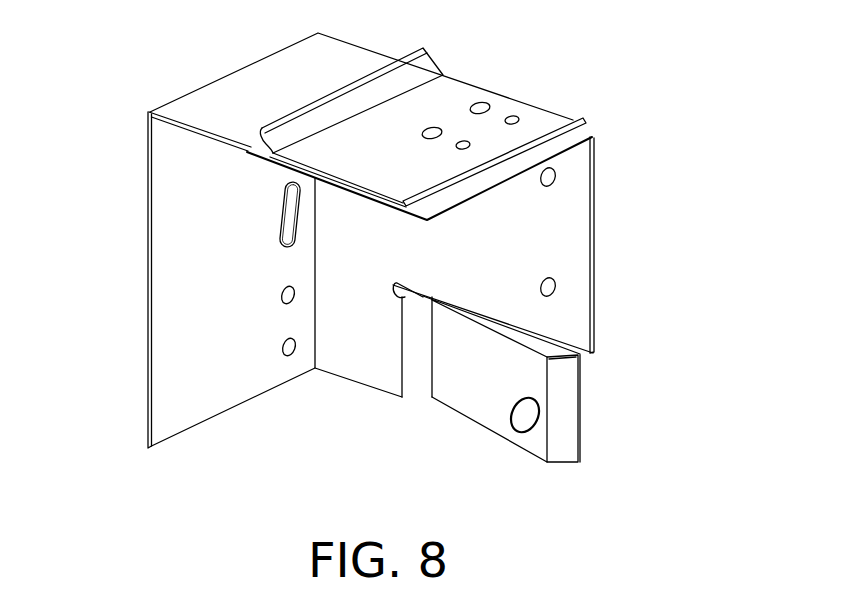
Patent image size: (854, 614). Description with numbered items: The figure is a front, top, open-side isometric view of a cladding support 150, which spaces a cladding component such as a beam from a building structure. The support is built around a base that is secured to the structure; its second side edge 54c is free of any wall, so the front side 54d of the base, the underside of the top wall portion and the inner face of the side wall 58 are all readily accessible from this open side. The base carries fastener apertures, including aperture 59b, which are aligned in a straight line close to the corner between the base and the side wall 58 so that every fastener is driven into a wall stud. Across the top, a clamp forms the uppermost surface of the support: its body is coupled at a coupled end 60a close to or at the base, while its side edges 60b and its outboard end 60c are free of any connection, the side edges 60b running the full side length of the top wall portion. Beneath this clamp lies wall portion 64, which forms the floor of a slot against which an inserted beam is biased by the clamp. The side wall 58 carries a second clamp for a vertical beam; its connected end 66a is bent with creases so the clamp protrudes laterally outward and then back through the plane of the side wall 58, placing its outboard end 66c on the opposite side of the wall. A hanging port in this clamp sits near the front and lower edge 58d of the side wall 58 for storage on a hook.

The cladding support 150 is at (378, 271).
The second side edge 54c is at (148, 293).
The front side of base 54d is at (220, 380).
The aperture 59b is at (291, 357).
The coupled end 60a is at (240, 68).
The side edges of clamp 60b is at (371, 50).
The outboard end 60c is at (583, 117).
The wall portion 64 is at (575, 134).
The side wall 58 is at (375, 364).
The connected end 66a is at (413, 388).
The lower edge of side wall 58d is at (494, 434).
The outboard end of clamp 66c is at (563, 447).